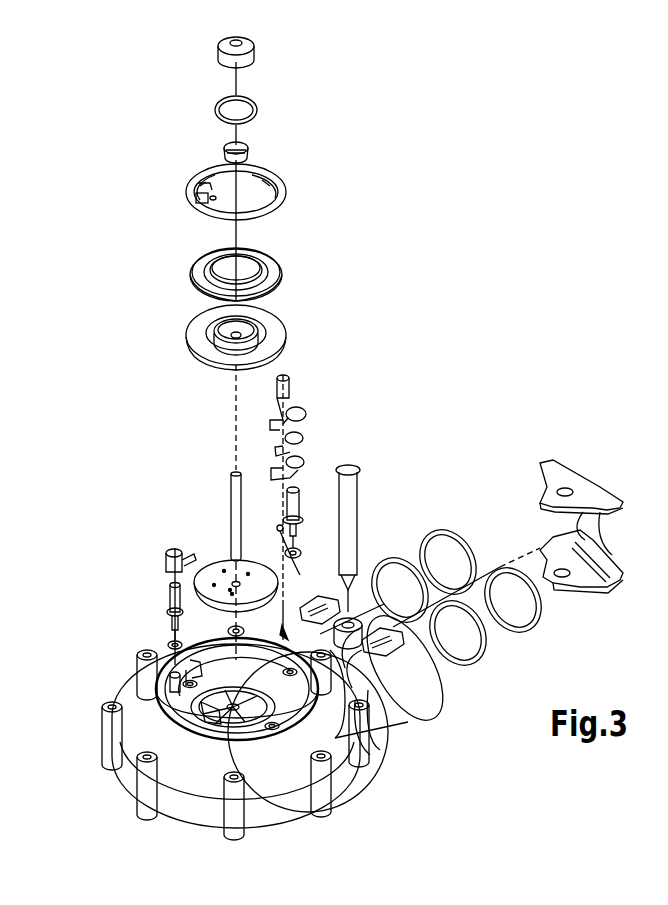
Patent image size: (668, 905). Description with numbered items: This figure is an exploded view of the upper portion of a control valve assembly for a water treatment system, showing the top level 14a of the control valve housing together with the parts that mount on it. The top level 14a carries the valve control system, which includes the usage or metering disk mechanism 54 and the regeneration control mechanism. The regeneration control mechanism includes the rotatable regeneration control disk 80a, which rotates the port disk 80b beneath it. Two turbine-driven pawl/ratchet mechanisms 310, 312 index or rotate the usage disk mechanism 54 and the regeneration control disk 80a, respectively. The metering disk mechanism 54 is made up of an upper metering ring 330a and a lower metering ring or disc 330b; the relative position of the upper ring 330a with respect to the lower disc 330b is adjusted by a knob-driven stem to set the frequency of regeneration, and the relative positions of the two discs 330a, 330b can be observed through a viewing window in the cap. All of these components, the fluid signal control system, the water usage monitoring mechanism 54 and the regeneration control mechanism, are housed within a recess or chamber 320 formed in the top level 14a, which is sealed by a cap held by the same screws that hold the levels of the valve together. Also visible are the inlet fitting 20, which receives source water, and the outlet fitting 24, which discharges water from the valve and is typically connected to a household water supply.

The top level of the control valve assembly 14a is at (102, 680).
The inlet fitting 20 is at (342, 600).
The outlet fitting 24 is at (398, 688).
The usage or metering disk mechanism 54 is at (298, 242).
The regeneration control disk 80a is at (195, 338).
The port disk 80b is at (217, 570).
The turbine-driven pawl/ratchet mechanism 310 is at (323, 446).
The turbine-driven pawl/ratchet mechanism 312 is at (157, 588).
The recess or chamber 320 is at (338, 812).
The upper metering ring 330a is at (277, 180).
The lower metering ring or disc 330b is at (282, 276).